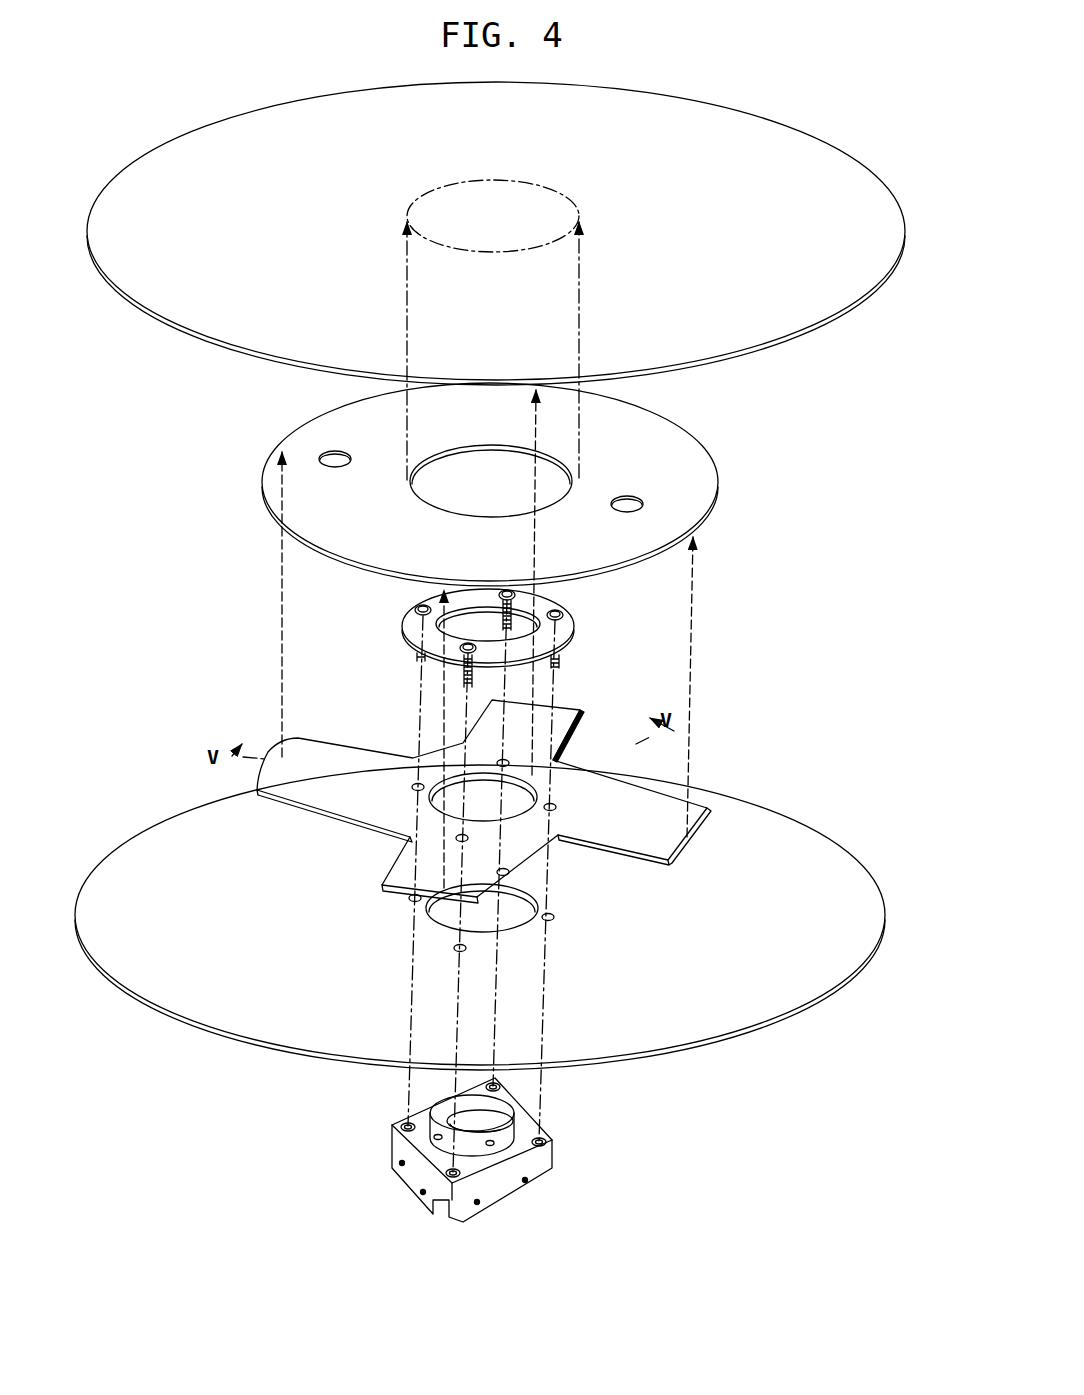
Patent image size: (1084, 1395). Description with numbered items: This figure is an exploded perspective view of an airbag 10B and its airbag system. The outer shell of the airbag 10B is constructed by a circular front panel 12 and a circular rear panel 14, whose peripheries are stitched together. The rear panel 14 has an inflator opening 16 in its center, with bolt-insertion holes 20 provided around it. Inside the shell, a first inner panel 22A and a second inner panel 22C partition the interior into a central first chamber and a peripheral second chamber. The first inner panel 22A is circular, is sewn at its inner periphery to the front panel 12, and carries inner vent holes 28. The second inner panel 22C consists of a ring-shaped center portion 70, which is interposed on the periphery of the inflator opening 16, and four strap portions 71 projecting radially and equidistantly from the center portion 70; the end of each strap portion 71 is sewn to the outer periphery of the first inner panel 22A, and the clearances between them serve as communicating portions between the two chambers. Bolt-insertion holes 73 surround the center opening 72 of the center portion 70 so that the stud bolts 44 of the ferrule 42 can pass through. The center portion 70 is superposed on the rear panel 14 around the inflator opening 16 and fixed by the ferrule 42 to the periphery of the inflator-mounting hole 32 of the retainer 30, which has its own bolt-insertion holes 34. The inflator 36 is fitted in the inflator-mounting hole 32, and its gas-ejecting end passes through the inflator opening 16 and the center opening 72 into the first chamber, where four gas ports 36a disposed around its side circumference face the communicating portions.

The front panel 12 is at (860, 138).
The rear panel 14 is at (480, 940).
The inflator opening 16 is at (500, 925).
The bolt-insertion holes 20 is at (509, 872).
The first inner panel 22A is at (682, 436).
The second inner panel 22C is at (532, 805).
The inner vent holes 28 is at (326, 452).
The retainer 30 is at (544, 1145).
The inflator-mounting hole 32 is at (398, 1189).
The bolt-insertion holes 34 is at (392, 1125).
The inflator 36 is at (579, 1169).
The gas ports 36a is at (512, 1114).
The ferrule 42 is at (572, 616).
The stud bolts 44 is at (500, 592).
The center portion 70 is at (400, 828).
The strap portions 71 is at (280, 787).
The center opening 72 is at (540, 782).
The bolt-insertion holes 73 is at (411, 787).
The airbag 10B is at (819, 1047).